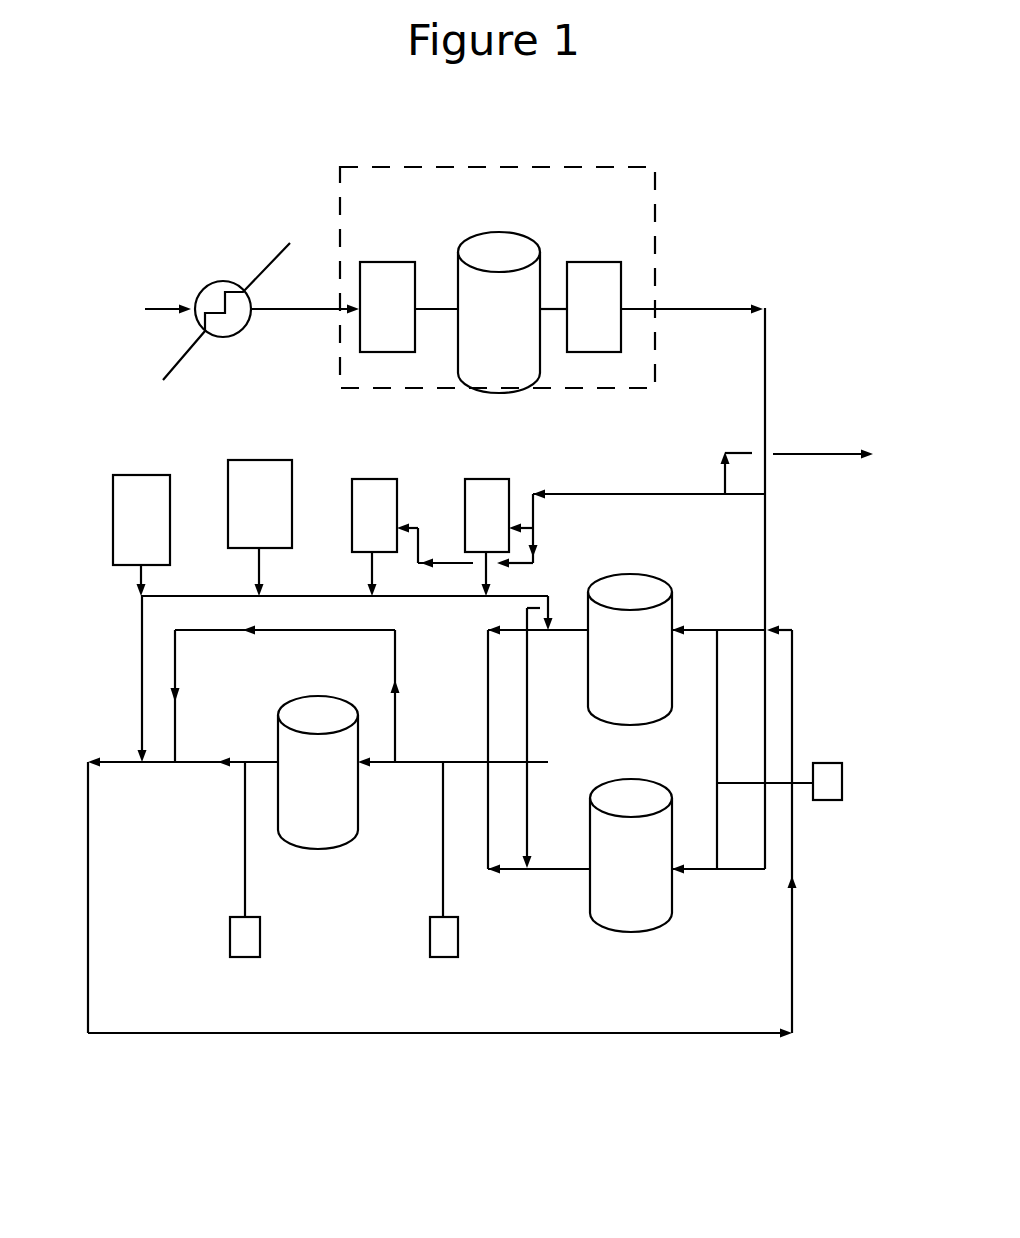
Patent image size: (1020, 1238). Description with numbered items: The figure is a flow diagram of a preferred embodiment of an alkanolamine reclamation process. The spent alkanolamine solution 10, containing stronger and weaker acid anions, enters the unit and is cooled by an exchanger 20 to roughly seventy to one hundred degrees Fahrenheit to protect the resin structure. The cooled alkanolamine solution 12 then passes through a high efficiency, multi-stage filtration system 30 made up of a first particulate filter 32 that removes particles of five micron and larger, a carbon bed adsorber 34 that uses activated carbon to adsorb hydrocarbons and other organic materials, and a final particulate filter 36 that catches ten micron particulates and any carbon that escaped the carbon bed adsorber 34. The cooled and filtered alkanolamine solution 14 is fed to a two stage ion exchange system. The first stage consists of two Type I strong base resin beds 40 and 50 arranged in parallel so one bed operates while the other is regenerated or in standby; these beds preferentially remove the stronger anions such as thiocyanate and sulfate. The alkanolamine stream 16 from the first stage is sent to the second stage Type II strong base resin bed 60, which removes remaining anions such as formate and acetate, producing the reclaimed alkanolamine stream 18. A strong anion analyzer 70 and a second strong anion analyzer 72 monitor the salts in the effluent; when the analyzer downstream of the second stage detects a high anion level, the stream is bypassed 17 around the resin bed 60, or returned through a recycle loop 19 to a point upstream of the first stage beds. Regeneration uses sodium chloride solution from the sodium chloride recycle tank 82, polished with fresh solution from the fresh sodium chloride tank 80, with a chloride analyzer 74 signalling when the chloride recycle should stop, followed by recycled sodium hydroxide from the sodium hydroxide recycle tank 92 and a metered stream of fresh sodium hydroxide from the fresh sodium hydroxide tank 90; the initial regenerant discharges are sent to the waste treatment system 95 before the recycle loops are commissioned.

The spent alkanolamine solution 10 is at (120, 327).
The cooled alkanolamine solution 12 is at (307, 309).
The cooled and filtered alkanolamine solution 14 is at (708, 308).
The alkanolamine stream from first stage 16 is at (413, 762).
The bypass 17 is at (395, 662).
The alkanolamine stream downstream of second stage 18 is at (138, 807).
The recycle loop 19 is at (203, 1034).
The exchanger 20 is at (223, 230).
The filtration system 30 is at (567, 167).
The particulate filter 32 is at (380, 262).
The carbon bed adsorber 34 is at (520, 233).
The particulate filter 36 is at (588, 262).
The Type I strong base ion exchange resin bed 40 is at (648, 577).
The Type I strong base ion exchange resin bed 50 is at (633, 930).
The Type II strong base resin bed 60 is at (310, 850).
The strong anion analyzer 70 is at (450, 958).
The strong anion analyzer 72 is at (248, 958).
The chloride analyzer 74 is at (817, 800).
The fresh sodium chloride tank 80 is at (228, 532).
The sodium chloride recycle tank 82 is at (509, 502).
The fresh sodium hydroxide tank 90 is at (113, 502).
The sodium hydroxide recycle tank 92 is at (397, 513).
The waste treatment system 95 is at (812, 377).